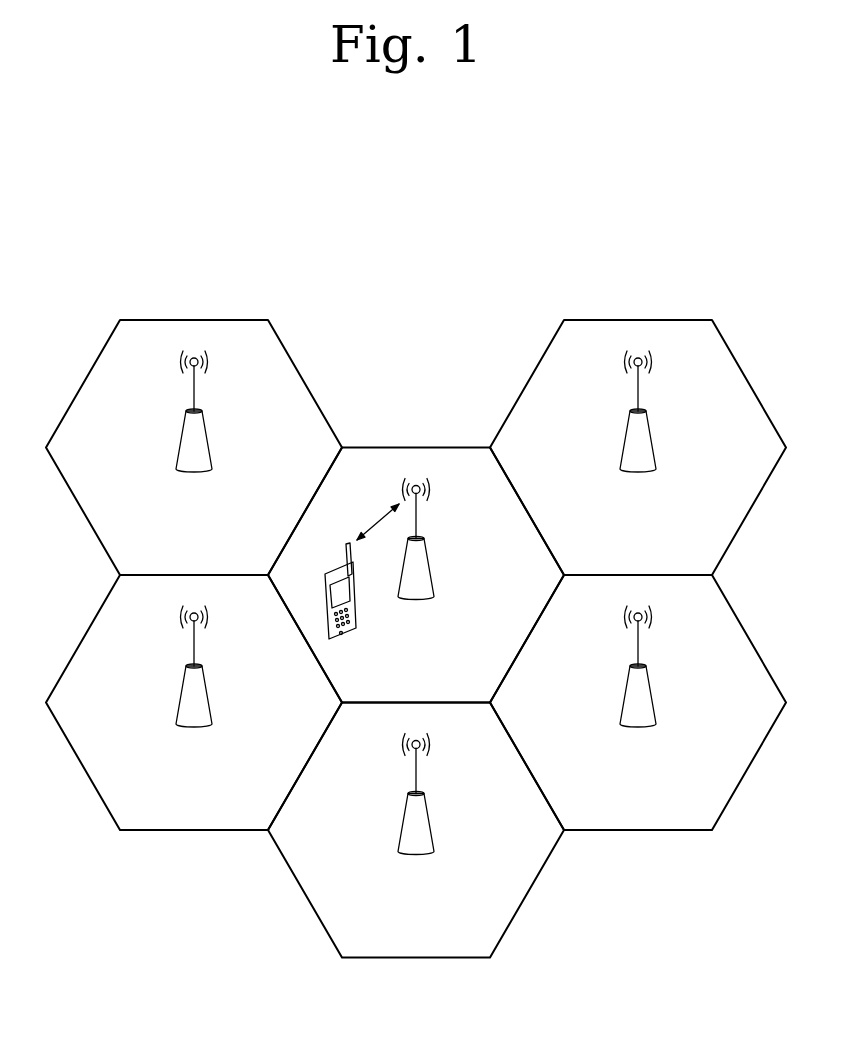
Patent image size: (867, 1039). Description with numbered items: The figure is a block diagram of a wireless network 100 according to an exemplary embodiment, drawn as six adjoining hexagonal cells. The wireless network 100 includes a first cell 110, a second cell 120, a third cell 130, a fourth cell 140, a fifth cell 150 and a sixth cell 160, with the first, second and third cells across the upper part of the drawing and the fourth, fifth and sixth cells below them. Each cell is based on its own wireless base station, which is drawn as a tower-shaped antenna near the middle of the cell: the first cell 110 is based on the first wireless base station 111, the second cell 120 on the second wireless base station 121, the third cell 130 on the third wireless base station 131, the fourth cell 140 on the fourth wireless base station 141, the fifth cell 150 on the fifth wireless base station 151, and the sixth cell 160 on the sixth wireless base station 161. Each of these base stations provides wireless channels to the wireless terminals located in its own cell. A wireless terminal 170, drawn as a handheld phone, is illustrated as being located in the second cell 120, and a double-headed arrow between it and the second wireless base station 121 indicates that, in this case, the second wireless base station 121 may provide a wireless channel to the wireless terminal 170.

The wireless network 100 is at (712, 207).
The first cell 110 is at (194, 410).
The first wireless base station 111 is at (199, 447).
The second cell 120 is at (416, 538).
The second wireless base station 121 is at (421, 575).
The third cell 130 is at (638, 410).
The third wireless base station 131 is at (643, 447).
The fourth cell 140 is at (194, 741).
The fourth wireless base station 141 is at (199, 702).
The fifth cell 150 is at (416, 869).
The fifth wireless base station 151 is at (421, 830).
The sixth cell 160 is at (638, 741).
The sixth wireless base station 161 is at (643, 702).
The wireless terminal 170 is at (362, 594).